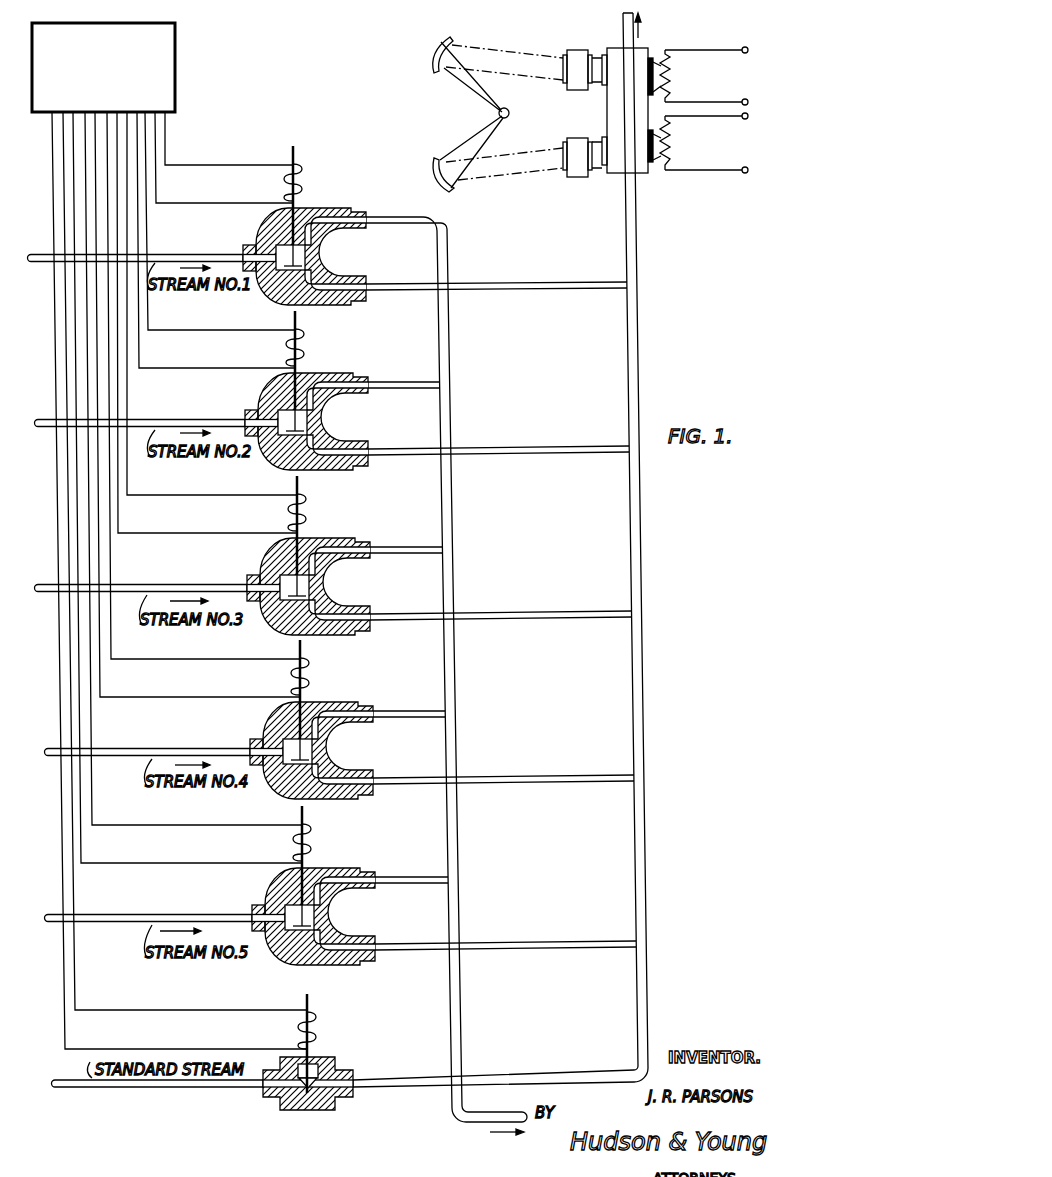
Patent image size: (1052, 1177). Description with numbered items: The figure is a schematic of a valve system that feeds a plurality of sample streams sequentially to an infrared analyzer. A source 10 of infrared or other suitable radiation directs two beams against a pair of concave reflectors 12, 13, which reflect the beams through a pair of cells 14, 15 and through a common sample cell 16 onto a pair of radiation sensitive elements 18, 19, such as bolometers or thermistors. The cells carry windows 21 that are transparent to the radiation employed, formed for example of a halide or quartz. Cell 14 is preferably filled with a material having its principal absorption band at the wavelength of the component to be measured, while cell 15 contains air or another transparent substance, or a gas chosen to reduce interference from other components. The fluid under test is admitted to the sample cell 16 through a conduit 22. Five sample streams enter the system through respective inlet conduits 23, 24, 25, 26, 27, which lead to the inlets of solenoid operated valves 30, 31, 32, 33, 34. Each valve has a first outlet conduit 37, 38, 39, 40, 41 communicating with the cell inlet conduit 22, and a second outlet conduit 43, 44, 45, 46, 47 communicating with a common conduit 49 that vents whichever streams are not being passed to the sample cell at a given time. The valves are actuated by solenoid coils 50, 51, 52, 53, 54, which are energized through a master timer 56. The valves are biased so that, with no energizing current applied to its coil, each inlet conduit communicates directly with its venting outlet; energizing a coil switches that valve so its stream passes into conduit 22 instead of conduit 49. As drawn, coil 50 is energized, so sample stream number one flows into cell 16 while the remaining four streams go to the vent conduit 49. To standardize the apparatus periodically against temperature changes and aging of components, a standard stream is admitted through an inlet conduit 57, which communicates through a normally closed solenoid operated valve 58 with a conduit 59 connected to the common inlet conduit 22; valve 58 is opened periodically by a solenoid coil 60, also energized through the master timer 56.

The source 10 is at (509, 116).
The concave reflector 12 is at (450, 37).
The concave reflector 13 is at (449, 190).
The cell 14 is at (572, 50).
The cell 15 is at (577, 177).
The sample cell 16 is at (648, 178).
The radiation sensitive element 18 is at (671, 78).
The radiation sensitive element 19 is at (671, 142).
The window 21 is at (566, 82).
The conduit 22 is at (641, 304).
The inlet conduit 23 is at (179, 255).
The inlet conduit 24 is at (182, 420).
The inlet conduit 25 is at (179, 585).
The inlet conduit 26 is at (182, 749).
The inlet conduit 27 is at (181, 916).
The solenoid operated valve 30 is at (322, 202).
The solenoid operated valve 31 is at (324, 370).
The solenoid operated valve 32 is at (321, 537).
The solenoid operated valve 33 is at (320, 700).
The solenoid operated valve 34 is at (328, 870).
The first outlet conduit 37 is at (393, 284).
The first outlet conduit 38 is at (401, 449).
The first outlet conduit 39 is at (398, 619).
The first outlet conduit 40 is at (402, 779).
The first outlet conduit 41 is at (402, 944).
The second outlet conduit 43 is at (390, 217).
The second outlet conduit 44 is at (393, 382).
The second outlet conduit 45 is at (395, 553).
The second outlet conduit 46 is at (393, 711).
The second outlet conduit 47 is at (402, 878).
The common conduit 49 is at (450, 380).
The solenoid coil 50 is at (298, 172).
The solenoid coil 51 is at (300, 343).
The solenoid coil 52 is at (303, 513).
The solenoid coil 53 is at (307, 678).
The solenoid coil 54 is at (310, 845).
The master timer 56 is at (176, 64).
The inlet conduit 57 is at (150, 1090).
The solenoid operated valve 58 is at (326, 1052).
The conduit 59 is at (400, 1078).
The solenoid coil 60 is at (310, 1020).